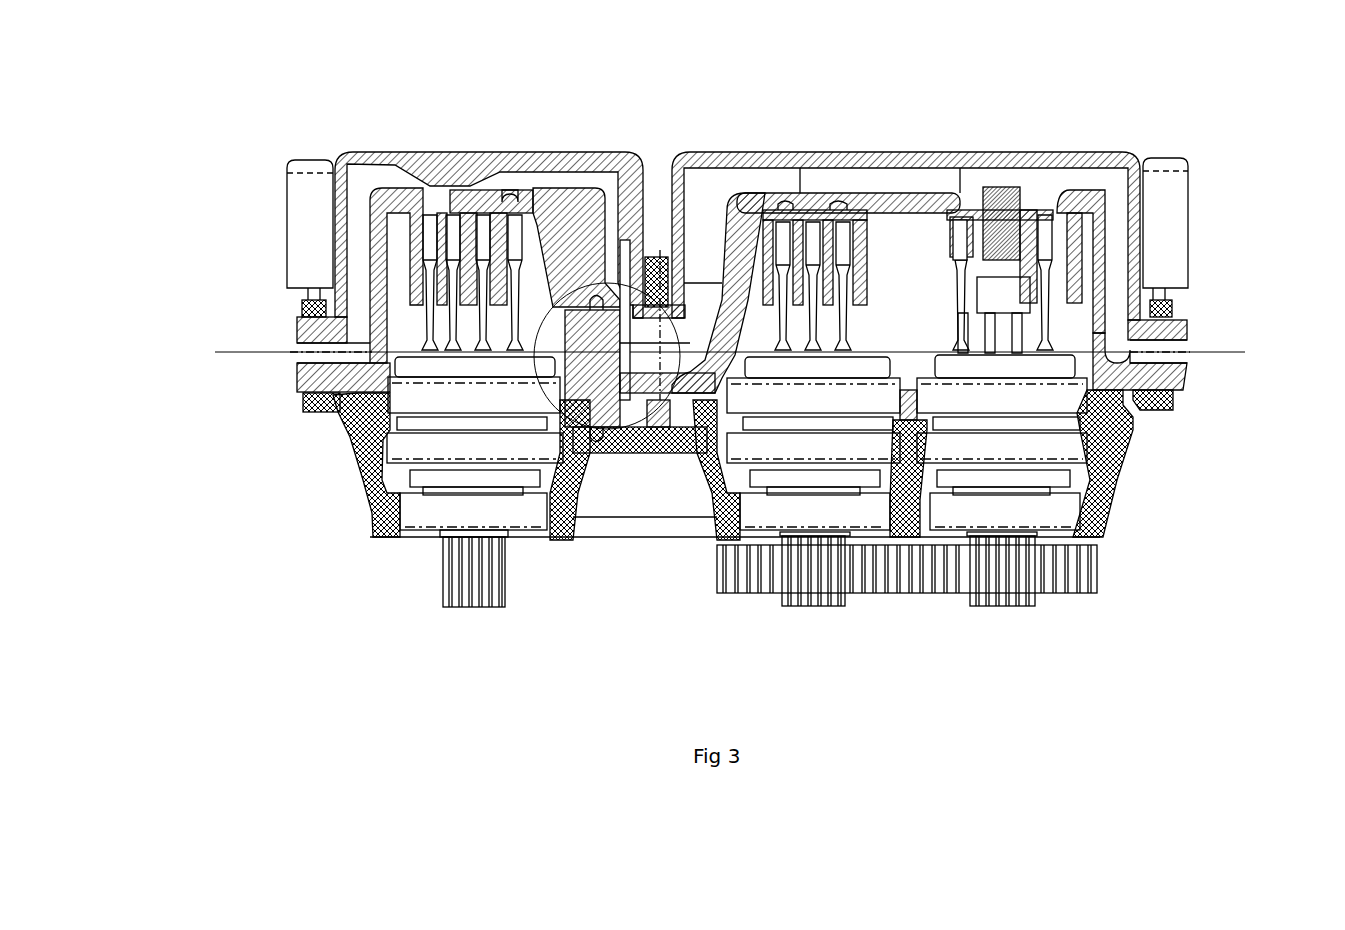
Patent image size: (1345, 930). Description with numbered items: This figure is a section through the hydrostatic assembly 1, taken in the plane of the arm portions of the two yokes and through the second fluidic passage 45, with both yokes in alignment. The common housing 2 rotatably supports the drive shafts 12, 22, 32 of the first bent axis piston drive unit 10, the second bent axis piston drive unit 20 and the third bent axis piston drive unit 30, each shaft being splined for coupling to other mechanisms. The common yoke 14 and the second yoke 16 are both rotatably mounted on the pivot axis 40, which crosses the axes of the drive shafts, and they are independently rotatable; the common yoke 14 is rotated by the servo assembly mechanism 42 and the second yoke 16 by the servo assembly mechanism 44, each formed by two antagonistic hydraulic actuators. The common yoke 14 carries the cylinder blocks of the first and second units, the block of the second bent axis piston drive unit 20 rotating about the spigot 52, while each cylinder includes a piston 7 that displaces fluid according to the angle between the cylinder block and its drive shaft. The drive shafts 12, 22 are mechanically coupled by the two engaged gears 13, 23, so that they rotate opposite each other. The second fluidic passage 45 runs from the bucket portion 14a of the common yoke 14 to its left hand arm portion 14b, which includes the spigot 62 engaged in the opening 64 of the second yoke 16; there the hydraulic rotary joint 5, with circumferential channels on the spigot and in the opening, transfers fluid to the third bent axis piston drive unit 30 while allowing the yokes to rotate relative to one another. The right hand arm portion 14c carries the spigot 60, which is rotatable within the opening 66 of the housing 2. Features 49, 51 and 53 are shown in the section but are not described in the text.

The hydrostatic assembly 1 is at (1147, 697).
The common housing 2 is at (355, 468).
The hydraulic rotary joint 5 is at (611, 275).
The piston 7 is at (935, 304).
The first bent axis piston drive unit 10 is at (870, 285).
The drive shaft 12 is at (815, 605).
The gear 13 is at (715, 597).
The common yoke 14 is at (792, 165).
The bucket portion 14a is at (818, 145).
The left hand arm portion 14b is at (690, 142).
The right hand arm portion 14c is at (1135, 145).
The second yoke 16 is at (395, 145).
The second bent axis piston drive unit 20 is at (948, 244).
The drive shaft 22 is at (1003, 605).
The gear 23 is at (1100, 590).
The third bent axis piston drive unit 30 is at (409, 283).
The drive shaft 32 is at (470, 608).
The pivot axis 40 is at (1225, 362).
The servo assembly mechanism 42 is at (1180, 188).
The servo assembly mechanism 44 is at (305, 220).
The second fluidic passage 45 is at (868, 178).
The pump body 49 is at (512, 176).
The port 51 is at (1165, 352).
The spigot 52 is at (1010, 210).
The port 53 is at (302, 348).
The spigot 60 is at (1160, 382).
The spigot 62 is at (588, 412).
The opening 64 is at (600, 420).
The opening 66 is at (1168, 385).